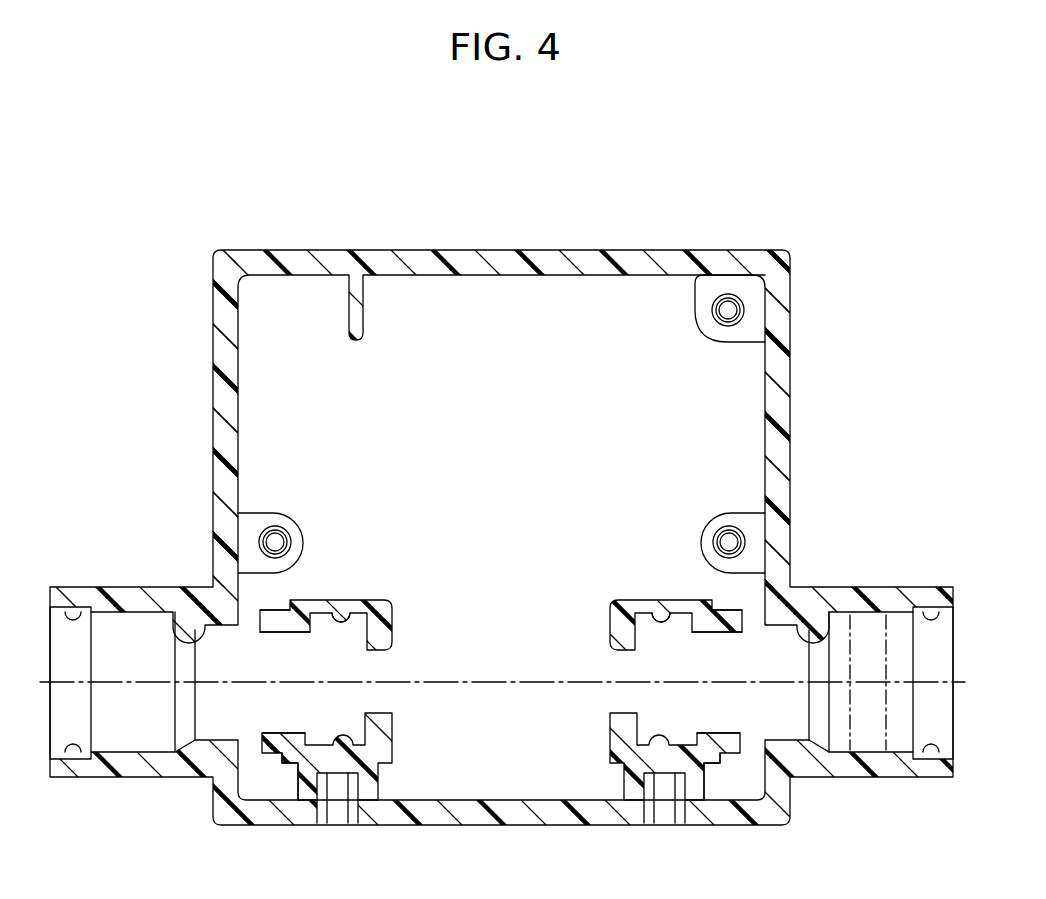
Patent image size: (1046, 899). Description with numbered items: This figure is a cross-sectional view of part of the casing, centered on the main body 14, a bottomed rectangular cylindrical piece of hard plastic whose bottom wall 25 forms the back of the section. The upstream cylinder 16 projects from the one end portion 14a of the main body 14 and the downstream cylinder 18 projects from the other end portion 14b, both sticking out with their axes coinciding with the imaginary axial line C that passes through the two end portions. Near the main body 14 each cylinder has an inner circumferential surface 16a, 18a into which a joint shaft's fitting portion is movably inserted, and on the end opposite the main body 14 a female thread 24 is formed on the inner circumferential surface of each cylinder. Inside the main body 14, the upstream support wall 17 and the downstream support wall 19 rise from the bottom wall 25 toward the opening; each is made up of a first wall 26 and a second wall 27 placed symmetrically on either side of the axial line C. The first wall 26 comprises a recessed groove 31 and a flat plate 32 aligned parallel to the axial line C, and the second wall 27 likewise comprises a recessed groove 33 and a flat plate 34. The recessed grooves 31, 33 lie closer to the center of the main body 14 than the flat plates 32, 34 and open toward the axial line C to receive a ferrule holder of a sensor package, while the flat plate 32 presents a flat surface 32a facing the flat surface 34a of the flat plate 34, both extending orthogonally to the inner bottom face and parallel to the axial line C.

The main body 14 is at (447, 250).
The one end portion 14a is at (262, 476).
The other end portion 14b is at (744, 476).
The upstream cylinder 16 is at (93, 779).
The inner circumferential surface 16a is at (185, 633).
The downstream cylinder 18 is at (913, 779).
The outlet passage 18a is at (808, 627).
The upstream support wall 17 is at (362, 589).
The downstream support wall 19 is at (648, 589).
The female thread 24 is at (922, 611).
The bottom wall 25 is at (605, 367).
The first wall 26 is at (560, 617).
The second wall 27 is at (560, 749).
The recessed groove 31 is at (665, 620).
The flat plate 32 is at (729, 613).
The flat surface 32a is at (677, 661).
The recessed groove 33 is at (659, 740).
The flat plate 34 is at (718, 753).
The flat surface 34a is at (718, 733).
The axial line C is at (158, 686).